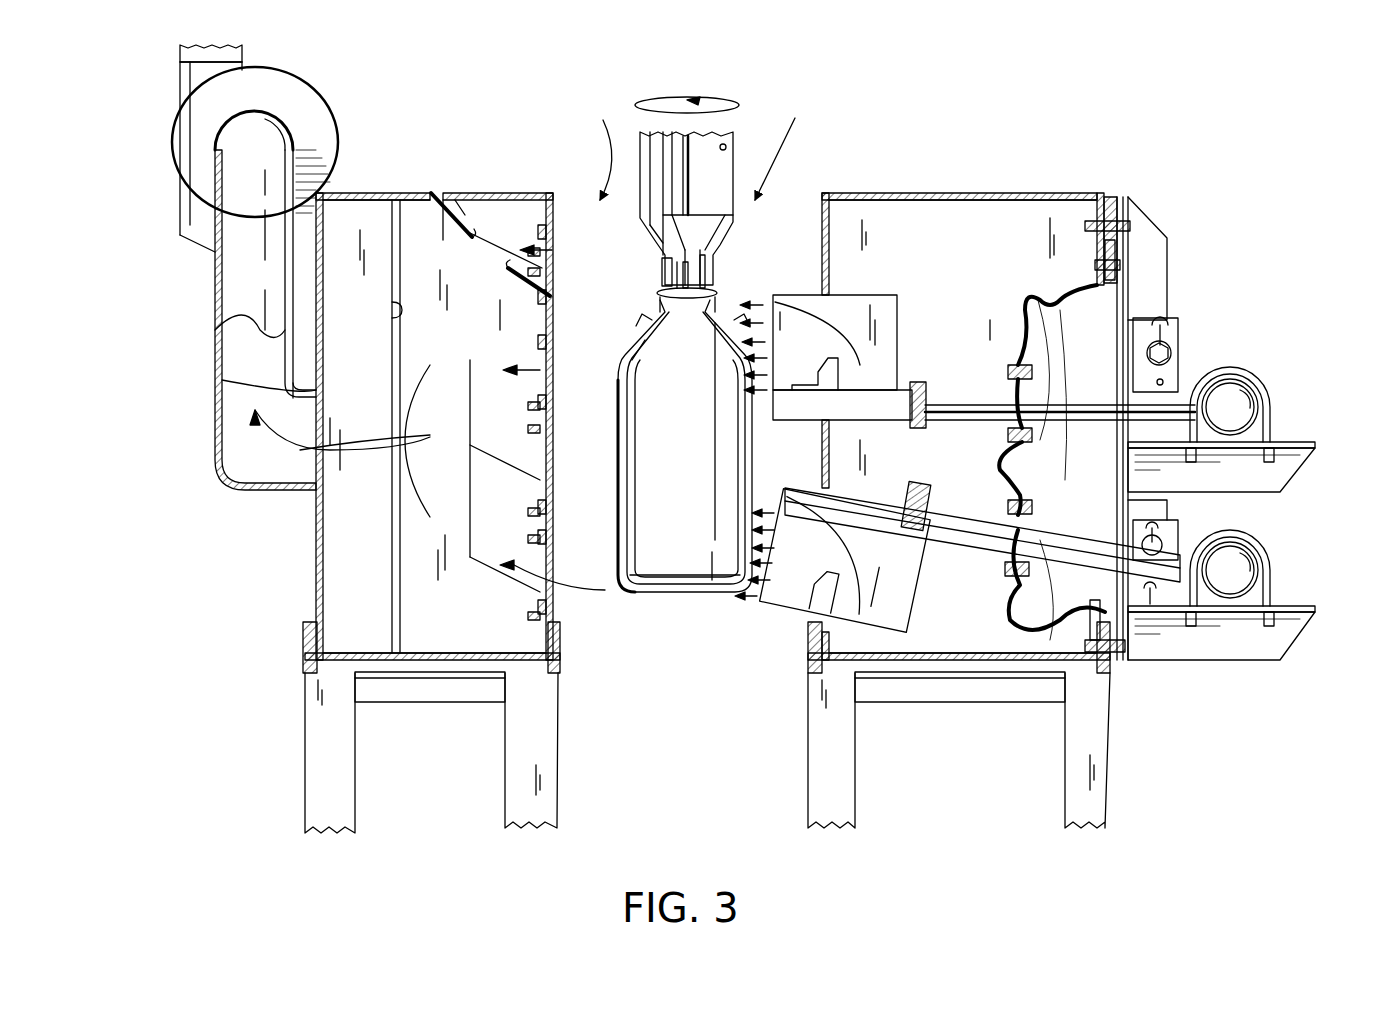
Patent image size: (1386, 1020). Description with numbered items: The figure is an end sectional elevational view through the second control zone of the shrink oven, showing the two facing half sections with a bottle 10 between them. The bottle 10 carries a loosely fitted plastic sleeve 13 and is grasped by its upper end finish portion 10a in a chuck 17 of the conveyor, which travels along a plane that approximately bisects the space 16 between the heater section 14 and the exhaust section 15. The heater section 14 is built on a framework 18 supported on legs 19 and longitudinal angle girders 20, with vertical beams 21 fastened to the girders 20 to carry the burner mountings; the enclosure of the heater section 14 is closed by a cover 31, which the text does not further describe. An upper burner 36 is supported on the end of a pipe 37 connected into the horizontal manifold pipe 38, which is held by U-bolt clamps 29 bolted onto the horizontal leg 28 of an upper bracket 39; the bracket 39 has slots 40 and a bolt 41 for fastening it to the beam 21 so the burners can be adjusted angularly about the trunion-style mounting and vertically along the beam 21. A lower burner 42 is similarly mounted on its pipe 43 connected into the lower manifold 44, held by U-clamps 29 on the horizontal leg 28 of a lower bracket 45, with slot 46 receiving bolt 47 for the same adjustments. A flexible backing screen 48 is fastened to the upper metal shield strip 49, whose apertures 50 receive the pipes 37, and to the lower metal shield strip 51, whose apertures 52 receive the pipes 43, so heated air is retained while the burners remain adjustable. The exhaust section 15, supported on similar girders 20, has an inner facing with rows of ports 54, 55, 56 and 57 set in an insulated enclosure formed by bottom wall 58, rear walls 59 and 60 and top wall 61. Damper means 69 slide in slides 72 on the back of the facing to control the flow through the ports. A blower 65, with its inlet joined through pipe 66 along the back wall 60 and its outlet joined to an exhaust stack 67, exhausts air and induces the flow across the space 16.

The bottle 10 is at (696, 427).
The upper end finish portion 10a is at (672, 281).
The plastic sleeve 13 is at (619, 399).
The heater section 14 is at (857, 190).
The exhaust section 15 is at (436, 190).
The space 16 is at (604, 507).
The chuck 17 is at (733, 229).
The framework 18 is at (405, 702).
The leg 19 is at (340, 783).
The longitudinal angle girder 20 is at (303, 665).
The vertical beam 21 is at (1160, 266).
The horizontal leg 28 is at (1285, 469).
The U-bolt clamp 29 is at (1273, 424).
The cover 31 is at (957, 193).
The upper burner 36 is at (872, 305).
The pipe 37 is at (949, 390).
The horizontal manifold pipe 38 is at (1262, 397).
The upper bracket 39 is at (1178, 344).
The slot 40 is at (1163, 380).
The bolt 41 is at (1165, 347).
The lower burner 42 is at (880, 613).
The pipe 43 is at (965, 519).
The lower manifold 44 is at (1262, 562).
The lower bracket 45 is at (1178, 527).
The slot 46 is at (1150, 605).
The bolt 47 is at (1165, 539).
The flexible backing screen 48 is at (1030, 319).
The upper metal shield strip 49 is at (1010, 433).
The aperture 50 is at (1008, 371).
The lower metal shield strip 51 is at (1005, 569).
The aperture 52 is at (1032, 511).
The port 54 is at (552, 250).
The port 55 is at (553, 359).
The port 56 is at (553, 461).
The port 57 is at (553, 579).
The bottom wall 58 is at (418, 660).
The rear wall 59 is at (392, 310).
The back wall 60 is at (318, 350).
The top wall 61 is at (372, 193).
The blower 65 is at (325, 119).
The pipe 66 is at (214, 329).
The exhaust stack 67 is at (243, 57).
The central damper means 69 is at (540, 230).
The slide 72 is at (540, 310).